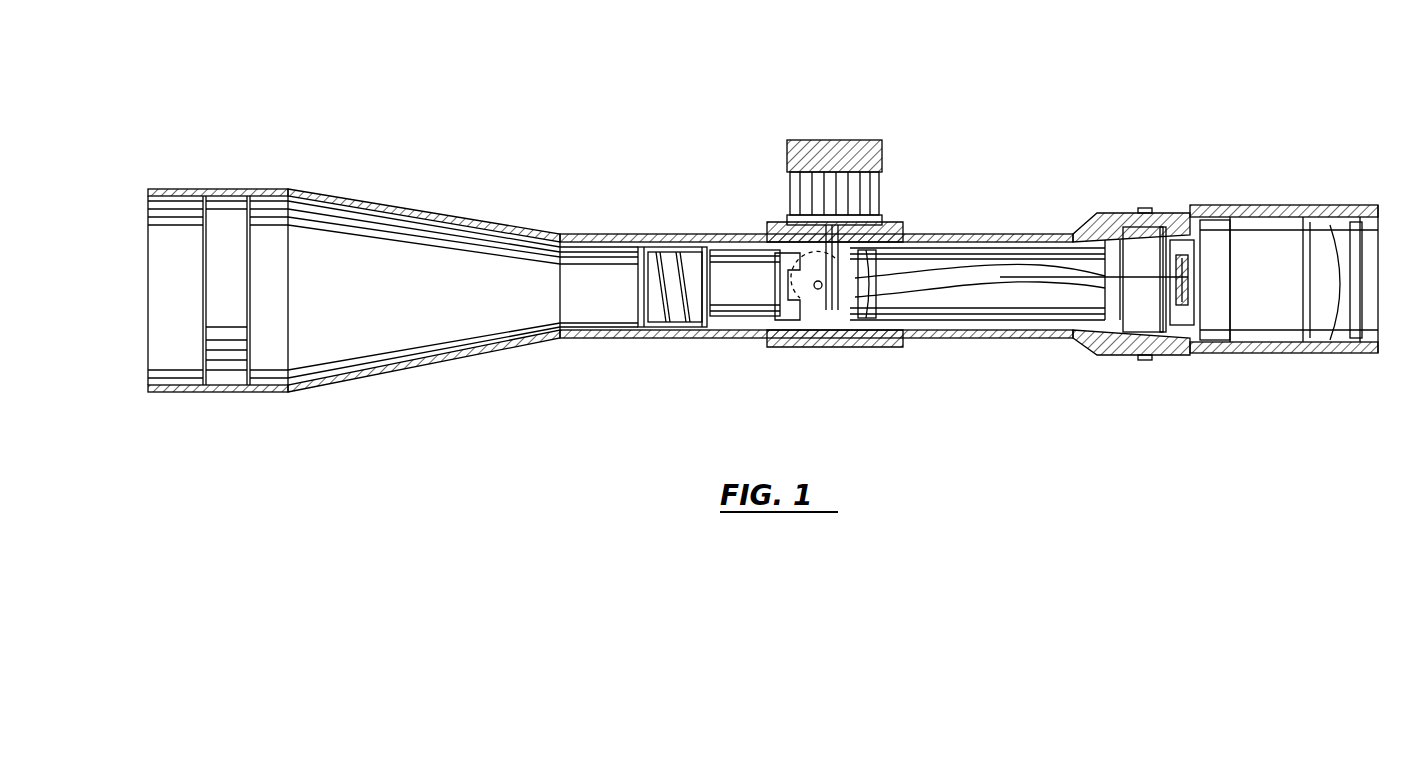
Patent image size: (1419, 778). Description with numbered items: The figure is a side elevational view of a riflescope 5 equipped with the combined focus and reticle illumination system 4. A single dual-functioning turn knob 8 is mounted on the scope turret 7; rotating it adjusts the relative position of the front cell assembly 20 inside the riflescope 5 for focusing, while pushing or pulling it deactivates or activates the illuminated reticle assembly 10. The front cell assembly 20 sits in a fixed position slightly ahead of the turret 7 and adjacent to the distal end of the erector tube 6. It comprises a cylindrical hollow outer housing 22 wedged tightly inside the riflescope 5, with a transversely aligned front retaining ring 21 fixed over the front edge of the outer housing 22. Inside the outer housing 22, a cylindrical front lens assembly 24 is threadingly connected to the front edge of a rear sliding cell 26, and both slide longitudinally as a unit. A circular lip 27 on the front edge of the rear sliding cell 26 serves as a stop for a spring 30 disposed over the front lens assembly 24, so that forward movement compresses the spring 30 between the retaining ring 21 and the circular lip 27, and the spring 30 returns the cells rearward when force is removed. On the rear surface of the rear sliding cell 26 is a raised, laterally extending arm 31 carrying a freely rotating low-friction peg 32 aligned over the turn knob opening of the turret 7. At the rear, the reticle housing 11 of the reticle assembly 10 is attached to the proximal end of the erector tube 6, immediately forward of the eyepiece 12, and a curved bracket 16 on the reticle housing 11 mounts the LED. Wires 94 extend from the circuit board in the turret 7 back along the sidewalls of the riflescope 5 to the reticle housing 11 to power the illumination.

The combined focus and reticle illumination system 4 is at (1072, 80).
The riflescope 5 is at (181, 398).
The erector tube 6 is at (995, 308).
The scope turret 7 is at (878, 230).
The turn knob 8 is at (868, 305).
The illuminated reticle assembly 10 is at (1182, 248).
The reticle housing 11 is at (1197, 248).
The eyepiece 12 is at (1312, 200).
The curved bracket 16 is at (1187, 297).
The front cell assembly 20 is at (768, 233).
The front retaining ring 21 is at (638, 320).
The outer housing 22 is at (670, 318).
The front lens assembly 24 is at (686, 312).
The rear sliding cell 26 is at (755, 310).
The circular lip 27 is at (712, 305).
The spring 30 is at (672, 288).
The extension arm 31 is at (800, 300).
The peg 32 is at (820, 292).
The wires 94 is at (1022, 268).